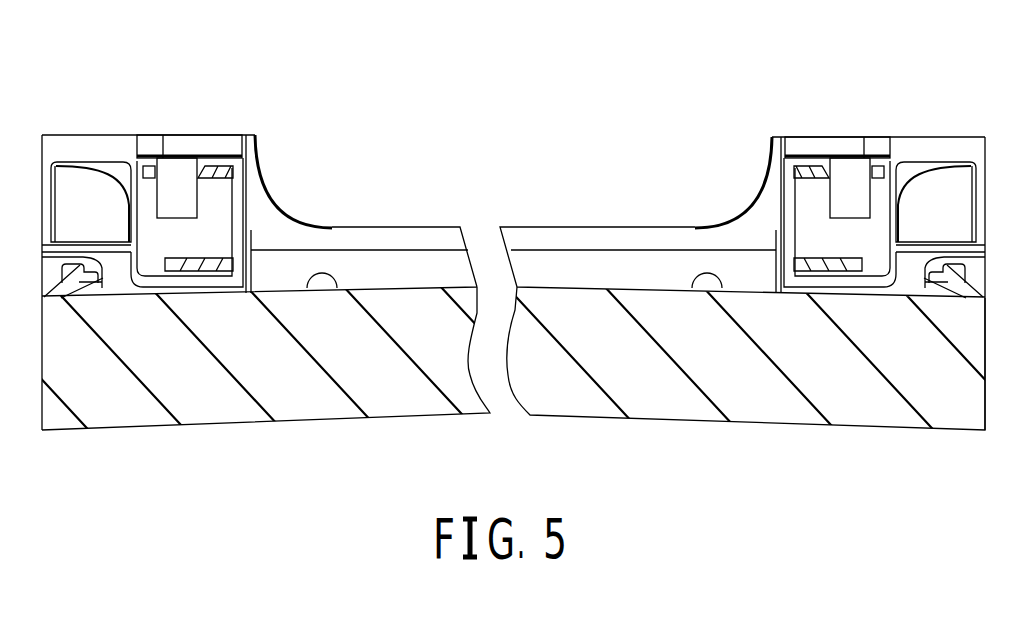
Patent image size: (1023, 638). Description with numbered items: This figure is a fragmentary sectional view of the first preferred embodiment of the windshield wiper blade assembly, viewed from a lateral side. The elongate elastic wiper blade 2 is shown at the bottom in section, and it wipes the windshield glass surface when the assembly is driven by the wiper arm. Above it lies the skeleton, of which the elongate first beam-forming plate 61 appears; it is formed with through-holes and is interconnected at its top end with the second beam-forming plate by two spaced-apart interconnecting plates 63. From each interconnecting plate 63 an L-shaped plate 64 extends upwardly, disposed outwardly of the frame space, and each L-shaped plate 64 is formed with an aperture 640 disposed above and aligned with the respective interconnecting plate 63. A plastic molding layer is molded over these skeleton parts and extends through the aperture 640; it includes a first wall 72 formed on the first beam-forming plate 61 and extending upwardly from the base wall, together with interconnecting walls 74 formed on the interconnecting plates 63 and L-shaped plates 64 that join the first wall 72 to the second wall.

The wiper blade 2 is at (683, 390).
The first beam-forming plate 61 is at (404, 275).
The interconnecting plate 63 is at (830, 262).
The L-shaped plate 64 is at (758, 186).
The aperture 640 is at (838, 172).
The first wall 72 is at (357, 225).
The interconnecting wall 74 is at (227, 135).